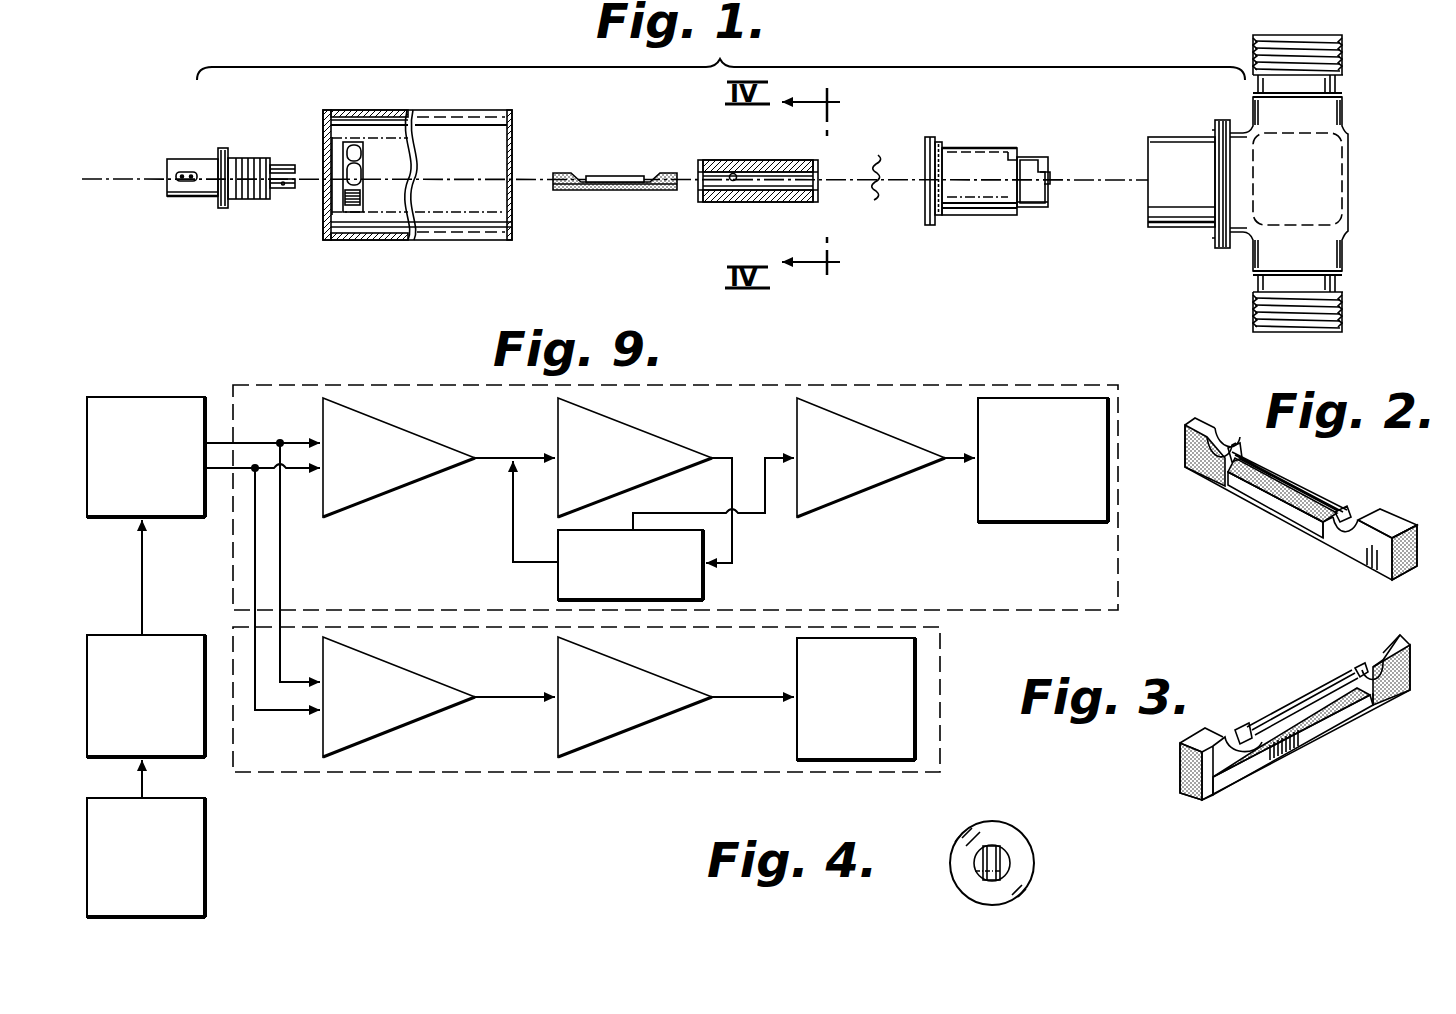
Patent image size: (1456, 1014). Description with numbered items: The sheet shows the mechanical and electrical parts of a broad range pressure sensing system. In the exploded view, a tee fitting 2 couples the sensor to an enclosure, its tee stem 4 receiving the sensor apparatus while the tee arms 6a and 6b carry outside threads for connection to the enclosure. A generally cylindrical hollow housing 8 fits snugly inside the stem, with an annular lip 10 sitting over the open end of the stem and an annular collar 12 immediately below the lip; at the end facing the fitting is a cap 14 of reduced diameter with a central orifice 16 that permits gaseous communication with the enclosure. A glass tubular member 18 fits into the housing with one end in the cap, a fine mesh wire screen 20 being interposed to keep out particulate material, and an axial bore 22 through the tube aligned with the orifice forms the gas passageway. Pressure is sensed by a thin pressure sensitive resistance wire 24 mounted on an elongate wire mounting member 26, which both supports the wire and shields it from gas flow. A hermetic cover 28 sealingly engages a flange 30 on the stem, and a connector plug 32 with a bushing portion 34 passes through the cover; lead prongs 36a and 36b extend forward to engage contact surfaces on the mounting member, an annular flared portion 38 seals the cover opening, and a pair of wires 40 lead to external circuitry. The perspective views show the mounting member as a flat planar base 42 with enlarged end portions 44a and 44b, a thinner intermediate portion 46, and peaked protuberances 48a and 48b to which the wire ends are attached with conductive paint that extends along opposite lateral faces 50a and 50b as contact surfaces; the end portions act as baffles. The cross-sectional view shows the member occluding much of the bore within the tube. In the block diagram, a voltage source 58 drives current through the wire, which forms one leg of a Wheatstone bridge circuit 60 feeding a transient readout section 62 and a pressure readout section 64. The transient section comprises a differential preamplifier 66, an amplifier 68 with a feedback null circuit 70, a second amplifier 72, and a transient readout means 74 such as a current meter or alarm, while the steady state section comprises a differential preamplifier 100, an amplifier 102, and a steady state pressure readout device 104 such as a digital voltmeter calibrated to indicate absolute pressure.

In FIG. 1, the tee fitting 2 is at (1266, 183).
In FIG. 1, the tee stem 4 is at (1165, 163).
In FIG. 1, the tee arm 6a is at (1342, 66).
In FIG. 1, the tee arm 6b is at (1342, 302).
In FIG. 1, the housing 8 is at (991, 166).
In FIG. 1, the annular lip 10 is at (926, 200).
In FIG. 1, the annular collar 12 is at (937, 142).
In FIG. 1, the cap 14 is at (1026, 185).
In FIG. 1, the orifice 16 is at (1050, 179).
In FIG. 1, the glass tubular member 18 is at (758, 181).
In FIG. 4, the glass tubular member 18 is at (998, 840).
In FIG. 1, the fine mesh wire screen 20 is at (883, 165).
In FIG. 1, the axial bore 22 is at (733, 173).
In FIG. 4, the axial bore 22 is at (1010, 863).
In FIG. 1, the pressure sensitive resistance wire 24 is at (615, 176).
In FIG. 9, the pressure sensitive resistance wire 24 is at (108, 648).
In FIG. 2, the pressure sensitive resistance wire 24 is at (1288, 488).
In FIG. 3, the pressure sensitive resistance wire 24 is at (1278, 710).
In FIG. 1, the wire mounting member 26 is at (615, 183).
In FIG. 4, the wire mounting member 26 is at (965, 873).
In FIG. 2, the wire mounting member 26 is at (1283, 481).
In FIG. 3, the wire mounting member 26 is at (1250, 729).
In FIG. 1, the hermetic cover 28 is at (463, 202).
In FIG. 1, the flange 30 is at (1223, 120).
In FIG. 1, the connector plug 32 is at (190, 203).
In FIG. 1, the bushing portion 34 is at (245, 199).
In FIG. 1, the lead prong 36a is at (285, 165).
In FIG. 1, the lead prong 36b is at (284, 188).
In FIG. 1, the annular flared portion 38 is at (222, 148).
In FIG. 1, the wires 40 is at (193, 175).
In FIG. 2, the flat planar base 42 is at (1253, 508).
In FIG. 3, the flat planar base 42 is at (1350, 723).
In FIG. 2, the enlarged end portion 44a is at (1356, 536).
In FIG. 3, the enlarged end portion 44a is at (1183, 736).
In FIG. 2, the enlarged end portion 44b is at (1203, 428).
In FIG. 3, the enlarged end portion 44b is at (1393, 645).
In FIG. 2, the intermediate portion 46 is at (1227, 482).
In FIG. 3, the intermediate portion 46 is at (1310, 717).
In FIG. 2, the peaked protuberance 48a is at (1233, 448).
In FIG. 3, the peaked protuberance 48a is at (1362, 675).
In FIG. 2, the peaked protuberance 48b is at (1343, 513).
In FIG. 3, the peaked protuberance 48b is at (1242, 732).
In FIG. 2, the lateral face 50a is at (1383, 558).
In FIG. 3, the lateral face 50a is at (1175, 781).
In FIG. 2, the lateral face 50b is at (1415, 522).
In FIG. 3, the lateral face 50b is at (1208, 774).
In FIG. 9, the voltage source 58 is at (190, 882).
In FIG. 9, the Wheatstone bridge circuit 60 is at (122, 408).
In FIG. 9, the transient readout section 62 is at (418, 385).
In FIG. 9, the pressure readout section 64 is at (622, 772).
In FIG. 9, the differential preamplifier 66 is at (383, 480).
In FIG. 9, the amplifier 68 is at (643, 433).
In FIG. 9, the null circuit 70 is at (558, 579).
In FIG. 9, the second amplifier 72 is at (898, 443).
In FIG. 9, the transient readout means 74 is at (1037, 410).
In FIG. 9, the differential preamplifier 100 is at (385, 720).
In FIG. 9, the amplifier 102 is at (650, 718).
In FIG. 9, the steady state pressure readout device 104 is at (857, 645).